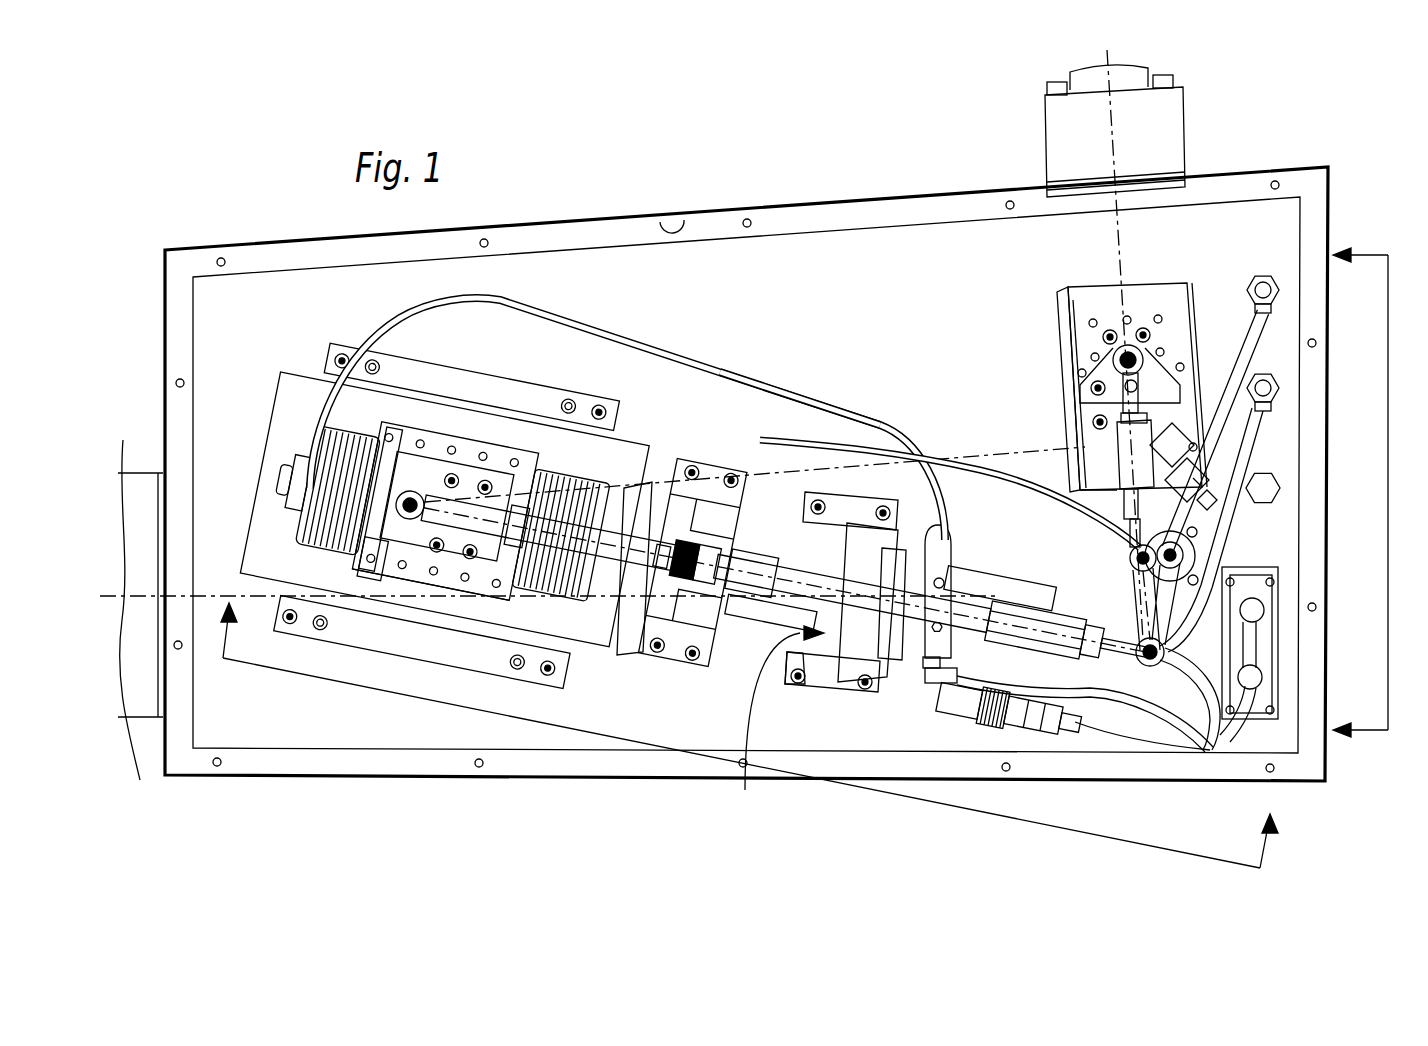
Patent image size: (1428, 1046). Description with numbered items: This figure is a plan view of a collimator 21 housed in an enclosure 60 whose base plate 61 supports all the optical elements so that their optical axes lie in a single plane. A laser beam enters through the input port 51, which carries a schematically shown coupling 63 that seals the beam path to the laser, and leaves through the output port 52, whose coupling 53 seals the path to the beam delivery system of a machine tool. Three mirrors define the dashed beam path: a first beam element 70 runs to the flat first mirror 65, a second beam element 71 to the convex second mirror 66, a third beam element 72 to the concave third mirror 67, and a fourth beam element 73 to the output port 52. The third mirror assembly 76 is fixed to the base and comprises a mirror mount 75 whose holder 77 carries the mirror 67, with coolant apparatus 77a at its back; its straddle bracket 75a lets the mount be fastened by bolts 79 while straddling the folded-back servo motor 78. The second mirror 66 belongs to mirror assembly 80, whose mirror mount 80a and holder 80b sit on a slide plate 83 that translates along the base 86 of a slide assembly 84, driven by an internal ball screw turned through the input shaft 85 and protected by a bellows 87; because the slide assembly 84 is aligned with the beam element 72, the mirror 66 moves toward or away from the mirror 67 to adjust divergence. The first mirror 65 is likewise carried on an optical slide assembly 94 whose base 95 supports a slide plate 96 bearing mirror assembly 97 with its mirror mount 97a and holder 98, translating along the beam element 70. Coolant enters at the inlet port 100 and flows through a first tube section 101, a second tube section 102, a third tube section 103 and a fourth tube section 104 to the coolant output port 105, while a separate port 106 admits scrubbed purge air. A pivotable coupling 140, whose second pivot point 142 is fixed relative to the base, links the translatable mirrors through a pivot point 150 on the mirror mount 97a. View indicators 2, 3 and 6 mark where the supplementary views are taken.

The collimator 21 is at (788, 158).
The enclosure 60 is at (680, 218).
The base plate 61 is at (870, 300).
The coupling 63 is at (1045, 138).
The input port 51 is at (1163, 195).
The coupling 53 is at (133, 473).
The output port 52 is at (162, 678).
The slide assembly 84 is at (252, 475).
The bellows 87 is at (577, 477).
The second mirror 66 is at (368, 478).
The slide plate 83 is at (377, 553).
The mirror assembly 80 is at (455, 420).
The mirror mount 80a is at (420, 347).
The holder 80b is at (417, 573).
The servo motor 78 is at (808, 573).
The input shaft 85 is at (623, 620).
The fourth beam element 73 is at (588, 600).
The third beam element 72 is at (710, 597).
The coolant apparatus 77a is at (950, 585).
The third mirror 67 is at (890, 607).
The section line 2 is at (742, 757).
The section line 3 is at (1379, 492).
The second beam element 71 is at (975, 470).
The mirror mount 75 is at (867, 580).
The straddle bracket 75a is at (828, 683).
The bolts 79 is at (865, 690).
The third mirror assembly 76 is at (776, 727).
The holder 77 is at (953, 562).
The base 86 is at (547, 440).
The second tube section 102 is at (833, 402).
The third tube section 103 is at (807, 447).
The first beam element 70 is at (1118, 258).
The slide plate 96 is at (1153, 297).
The optical slide assembly 94 is at (1040, 302).
The base 95 is at (1065, 352).
The mirror assembly 97 is at (1055, 408).
The mirror mount 97a is at (1090, 443).
The holder 98 is at (1205, 505).
The inlet port 100 is at (1273, 273).
The first tube section 101 is at (1257, 332).
The coolant output port 105 is at (1278, 392).
The first mirror 65 is at (1197, 447).
The purge gas port 106 is at (1273, 488).
The pivot point 150 is at (1133, 537).
The pivotable coupling 140 is at (1137, 613).
The second pivot point 142 is at (1175, 665).
The fourth tube section 104 is at (1085, 682).
The section line 6 is at (1170, 665).